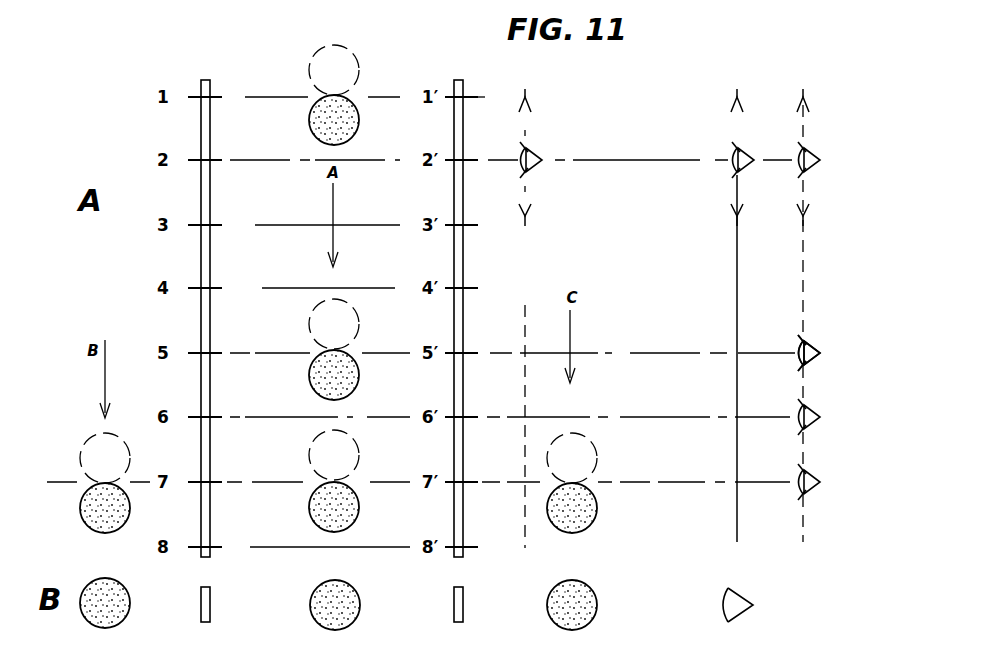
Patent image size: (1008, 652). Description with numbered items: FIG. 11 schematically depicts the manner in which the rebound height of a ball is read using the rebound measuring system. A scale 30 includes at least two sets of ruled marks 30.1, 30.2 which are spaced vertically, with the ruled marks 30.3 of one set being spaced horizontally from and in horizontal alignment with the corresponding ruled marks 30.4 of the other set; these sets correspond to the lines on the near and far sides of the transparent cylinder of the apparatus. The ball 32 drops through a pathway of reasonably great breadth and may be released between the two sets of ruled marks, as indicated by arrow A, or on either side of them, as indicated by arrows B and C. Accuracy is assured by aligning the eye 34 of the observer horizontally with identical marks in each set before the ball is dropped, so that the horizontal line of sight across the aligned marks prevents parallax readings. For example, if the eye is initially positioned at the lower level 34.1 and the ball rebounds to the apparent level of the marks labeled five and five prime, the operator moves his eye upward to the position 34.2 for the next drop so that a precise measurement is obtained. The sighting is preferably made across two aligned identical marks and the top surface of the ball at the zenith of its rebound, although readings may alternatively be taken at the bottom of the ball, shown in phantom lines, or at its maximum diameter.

The scale 30 is at (168, 380).
The set of ruled marks 30.1 is at (210, 560).
The set of ruled marks 30.2 is at (454, 560).
The ruled marks 30.3 is at (200, 290).
The ruled marks 30.4 is at (470, 290).
The ball 32 is at (310, 370).
The eye 34 is at (814, 406).
The eye at lower level 34.1 is at (818, 480).
The eye at upper level 34.2 is at (816, 340).